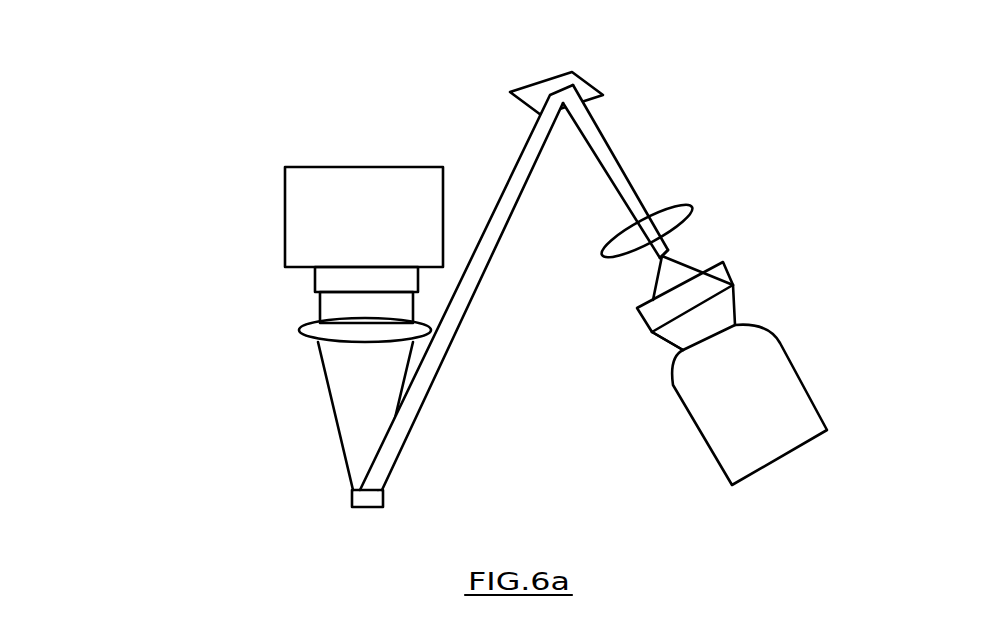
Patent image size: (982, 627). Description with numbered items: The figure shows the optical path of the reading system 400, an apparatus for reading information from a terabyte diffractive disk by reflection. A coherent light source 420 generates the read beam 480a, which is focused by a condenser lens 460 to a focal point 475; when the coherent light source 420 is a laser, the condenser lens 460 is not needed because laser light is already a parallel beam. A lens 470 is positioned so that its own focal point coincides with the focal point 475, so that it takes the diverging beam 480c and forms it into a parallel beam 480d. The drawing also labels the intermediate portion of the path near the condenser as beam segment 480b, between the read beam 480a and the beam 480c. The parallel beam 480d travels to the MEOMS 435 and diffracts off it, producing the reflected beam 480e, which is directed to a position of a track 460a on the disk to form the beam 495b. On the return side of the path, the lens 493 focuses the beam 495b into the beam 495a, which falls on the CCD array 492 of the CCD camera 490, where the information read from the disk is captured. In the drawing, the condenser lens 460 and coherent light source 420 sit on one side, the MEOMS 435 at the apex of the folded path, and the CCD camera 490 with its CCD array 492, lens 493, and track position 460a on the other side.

The reading system 400 is at (138, 244).
The MEOMS 435 is at (583, 85).
The lens 470 is at (670, 213).
The focal point 475 is at (688, 264).
The condenser lens 460 is at (735, 285).
The coherent light source 420 is at (786, 348).
The read beam 480a is at (660, 337).
The optical arm segment b 480b is at (657, 280).
The beam 480c is at (667, 251).
The parallel beam 480d is at (609, 151).
The reflected beam 480e is at (511, 178).
The CCD camera 490 is at (285, 190).
The CCD array 492 is at (318, 280).
The beam 495a is at (320, 305).
The lens 493 is at (302, 332).
The beam 495b is at (332, 403).
The track 460a is at (352, 495).